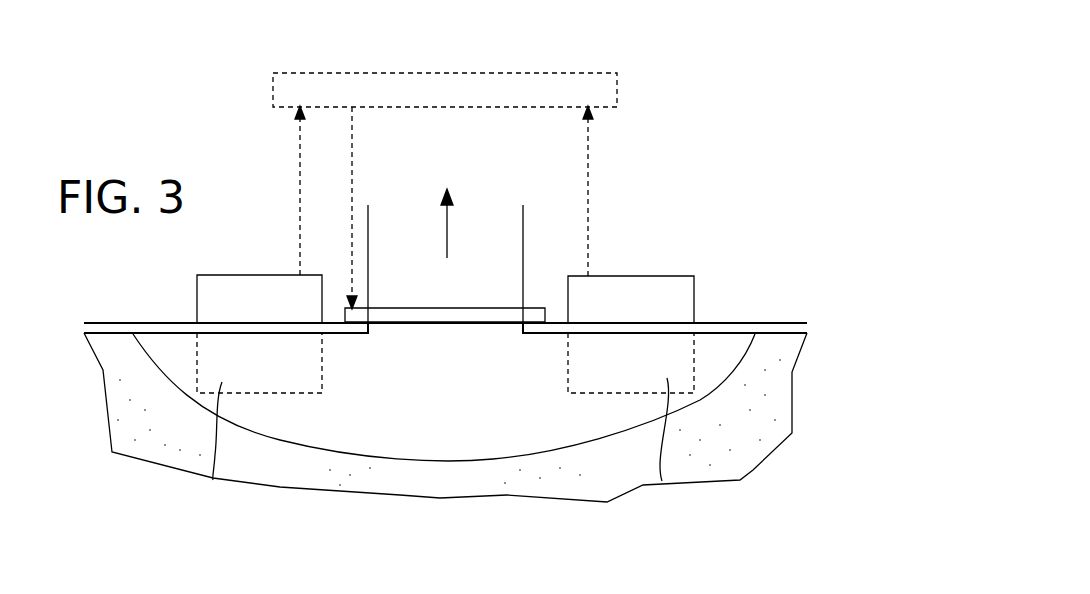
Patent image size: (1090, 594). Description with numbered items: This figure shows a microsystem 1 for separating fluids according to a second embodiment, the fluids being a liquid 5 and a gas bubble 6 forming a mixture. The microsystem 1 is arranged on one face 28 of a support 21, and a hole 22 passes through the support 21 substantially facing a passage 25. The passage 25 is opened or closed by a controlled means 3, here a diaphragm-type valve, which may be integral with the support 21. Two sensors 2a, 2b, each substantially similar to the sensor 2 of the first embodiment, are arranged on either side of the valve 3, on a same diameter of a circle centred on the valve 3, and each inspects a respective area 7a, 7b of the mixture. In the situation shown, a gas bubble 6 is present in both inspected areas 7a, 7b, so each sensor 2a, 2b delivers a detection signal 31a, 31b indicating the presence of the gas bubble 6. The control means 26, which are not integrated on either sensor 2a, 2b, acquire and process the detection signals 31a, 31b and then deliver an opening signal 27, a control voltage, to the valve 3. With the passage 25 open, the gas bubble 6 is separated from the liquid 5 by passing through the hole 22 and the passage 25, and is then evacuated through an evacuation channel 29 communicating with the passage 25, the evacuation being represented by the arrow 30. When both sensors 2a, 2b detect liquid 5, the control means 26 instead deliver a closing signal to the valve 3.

The microsystem 1 is at (613, 242).
The sensor 2 is at (767, 379).
The first sensor 2a is at (203, 297).
The second sensor 2b is at (672, 287).
The controlled means 3 is at (397, 308).
The liquid 5 is at (752, 440).
The gas bubble 6 is at (403, 447).
The first inspected area 7a is at (213, 480).
The second inspected area 7b is at (662, 481).
The support 21 is at (788, 328).
The hole 22 is at (430, 335).
The passage 25 is at (470, 321).
The control means 26 is at (452, 85).
The opening signal 27 is at (352, 148).
The face 28 is at (758, 322).
The evacuation channel 29 is at (465, 237).
The evacuation arrow 30 is at (430, 233).
The first detection signal 31a is at (300, 183).
The second detection signal 31b is at (588, 183).